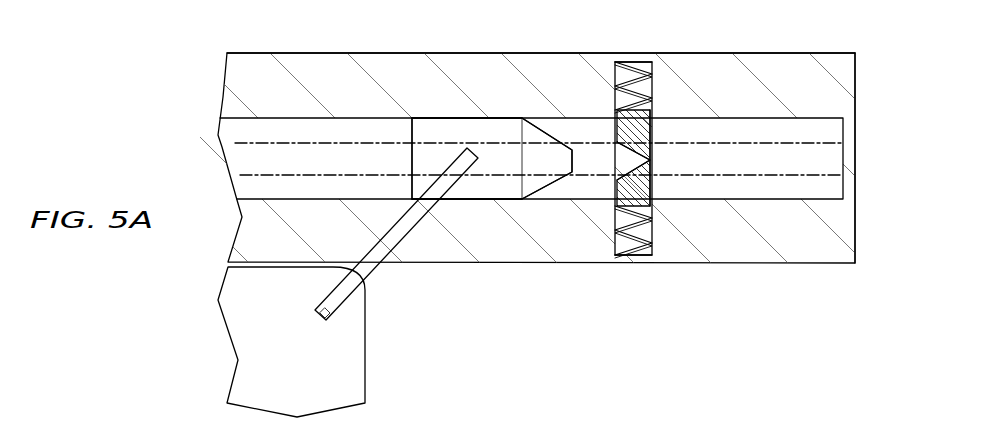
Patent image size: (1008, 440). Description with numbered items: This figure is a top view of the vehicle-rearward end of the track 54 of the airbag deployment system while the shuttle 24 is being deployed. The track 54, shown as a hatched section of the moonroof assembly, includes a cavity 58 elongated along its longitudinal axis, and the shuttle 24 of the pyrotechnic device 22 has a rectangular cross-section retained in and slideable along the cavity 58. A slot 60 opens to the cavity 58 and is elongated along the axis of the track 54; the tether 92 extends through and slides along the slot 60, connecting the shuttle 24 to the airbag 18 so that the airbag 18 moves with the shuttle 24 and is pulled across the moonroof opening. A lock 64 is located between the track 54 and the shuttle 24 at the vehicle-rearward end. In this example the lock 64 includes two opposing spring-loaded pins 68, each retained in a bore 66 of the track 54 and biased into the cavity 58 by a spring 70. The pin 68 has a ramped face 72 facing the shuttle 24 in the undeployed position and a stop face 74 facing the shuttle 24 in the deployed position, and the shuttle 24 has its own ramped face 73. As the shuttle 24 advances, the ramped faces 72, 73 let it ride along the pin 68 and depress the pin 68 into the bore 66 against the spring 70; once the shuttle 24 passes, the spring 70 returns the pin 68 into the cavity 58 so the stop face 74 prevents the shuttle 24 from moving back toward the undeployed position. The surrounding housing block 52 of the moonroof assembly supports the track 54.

The airbag 18 is at (367, 373).
The pyrotechnic device 22 is at (455, 105).
The shuttle 24 is at (410, 158).
The housing block 52 is at (779, 285).
The track 54 is at (770, 83).
The cavity 58 is at (812, 162).
The slot 60 is at (800, 143).
The lock 64 is at (640, 48).
The bore 66 is at (615, 75).
The spring-loaded pin 68 is at (653, 128).
The spring 70 is at (615, 100).
The ramped face 72 is at (628, 150).
The ramped face 73 is at (548, 118).
The stop face 74 is at (653, 152).
The tether 92 is at (397, 242).